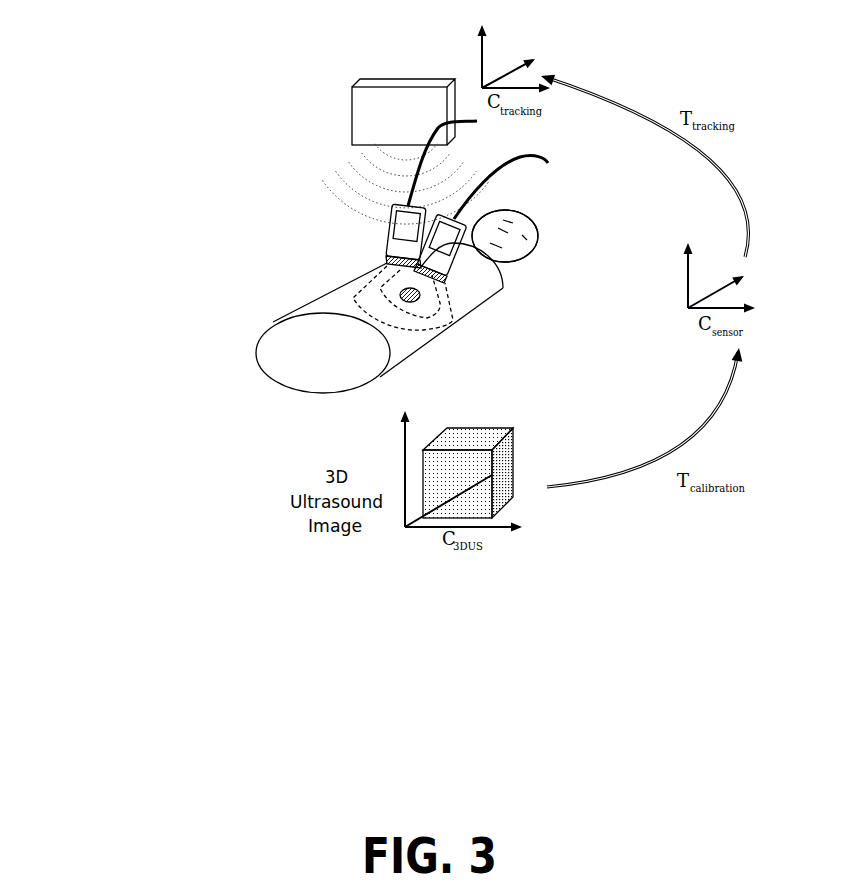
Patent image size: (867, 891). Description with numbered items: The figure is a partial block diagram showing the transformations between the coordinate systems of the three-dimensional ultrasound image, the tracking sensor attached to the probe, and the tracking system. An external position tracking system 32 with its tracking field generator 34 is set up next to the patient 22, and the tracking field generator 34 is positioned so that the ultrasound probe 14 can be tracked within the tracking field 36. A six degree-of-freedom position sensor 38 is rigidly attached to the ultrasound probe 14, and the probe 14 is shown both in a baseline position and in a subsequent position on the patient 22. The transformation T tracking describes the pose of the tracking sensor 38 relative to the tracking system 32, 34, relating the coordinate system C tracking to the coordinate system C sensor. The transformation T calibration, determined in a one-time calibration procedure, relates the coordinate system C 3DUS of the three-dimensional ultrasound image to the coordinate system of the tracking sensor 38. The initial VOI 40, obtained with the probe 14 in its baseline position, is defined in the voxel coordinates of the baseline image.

The tracking system 32 is at (336, 106).
The tracking field generator 34 is at (353, 97).
The tracking field 36 is at (388, 196).
The ultrasound probe 14 is at (287, 216).
The position sensor 38 is at (475, 237).
The initial VOI 40 is at (445, 310).
The patient 22 is at (270, 355).